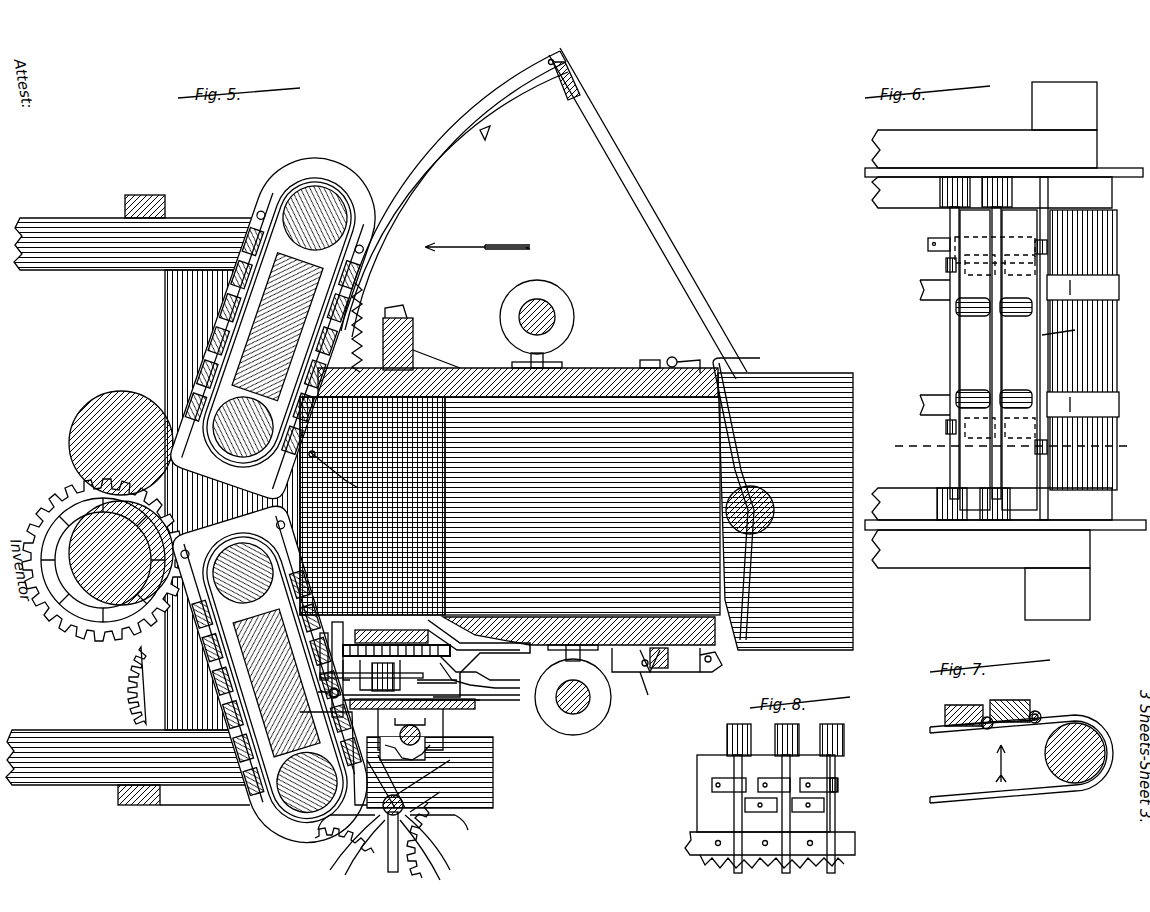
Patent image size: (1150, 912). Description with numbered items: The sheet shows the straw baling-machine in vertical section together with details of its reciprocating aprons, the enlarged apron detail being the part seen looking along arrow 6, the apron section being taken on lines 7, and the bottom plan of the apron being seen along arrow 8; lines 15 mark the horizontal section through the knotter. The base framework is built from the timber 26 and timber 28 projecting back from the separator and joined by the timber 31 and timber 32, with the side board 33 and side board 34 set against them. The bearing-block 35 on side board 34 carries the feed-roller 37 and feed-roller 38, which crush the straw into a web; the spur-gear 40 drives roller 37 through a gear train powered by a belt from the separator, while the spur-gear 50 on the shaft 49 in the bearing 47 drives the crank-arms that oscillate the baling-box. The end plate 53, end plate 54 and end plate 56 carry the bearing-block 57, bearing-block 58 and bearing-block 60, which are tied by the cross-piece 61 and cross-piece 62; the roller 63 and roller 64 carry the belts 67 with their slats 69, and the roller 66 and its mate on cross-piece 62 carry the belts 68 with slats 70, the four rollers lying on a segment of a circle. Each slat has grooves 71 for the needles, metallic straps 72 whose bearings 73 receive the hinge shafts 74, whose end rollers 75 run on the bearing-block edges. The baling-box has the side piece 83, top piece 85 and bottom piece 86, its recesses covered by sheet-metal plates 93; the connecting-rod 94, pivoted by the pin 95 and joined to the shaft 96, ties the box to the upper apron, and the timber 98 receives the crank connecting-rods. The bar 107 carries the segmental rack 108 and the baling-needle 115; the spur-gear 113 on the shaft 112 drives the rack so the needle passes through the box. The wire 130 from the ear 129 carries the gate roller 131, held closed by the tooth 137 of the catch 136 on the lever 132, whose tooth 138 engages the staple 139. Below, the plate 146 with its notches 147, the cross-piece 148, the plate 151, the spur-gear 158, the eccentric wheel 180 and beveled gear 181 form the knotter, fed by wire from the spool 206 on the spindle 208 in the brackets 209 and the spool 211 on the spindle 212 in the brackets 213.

In FIG. 5, the arrow 6 is at (477, 238).
In FIG. 6, the section lines 7 is at (1010, 447).
In FIG. 7, the arrow 8 is at (1007, 763).
In FIG. 5, the section lines 15 is at (490, 694).
In FIG. 5, the timber 26 is at (85, 268).
In FIG. 6, the timber 26 is at (1057, 594).
In FIG. 5, the timber 28 is at (75, 785).
In FIG. 6, the timber 28 is at (1064, 106).
In FIG. 5, the timber 31 is at (148, 196).
In FIG. 5, the timber 32 is at (130, 806).
In FIG. 6, the side board 33 is at (984, 149).
In FIG. 6, the side board 34 is at (981, 549).
In FIG. 5, the bearing-block 35 is at (148, 500).
In FIG. 5, the feed-roller 37 is at (73, 528).
In FIG. 5, the feed-roller 38 is at (80, 420).
In FIG. 5, the spur-gear 40 is at (62, 600).
In FIG. 5, the bearing 47 is at (403, 820).
In FIG. 5, the shaft 49 is at (378, 825).
In FIG. 5, the spur-gear 50 is at (465, 834).
In FIG. 5, the end plate 53 is at (233, 682).
In FIG. 5, the end plate 54 is at (264, 322).
In FIG. 6, the end plate 54 is at (1128, 530).
In FIG. 6, the end plate 56 is at (1118, 169).
In FIG. 5, the bearing-block 57 is at (333, 758).
In FIG. 5, the bearing-block 58 is at (279, 322).
In FIG. 6, the bearing-block 58 is at (1100, 503).
In FIG. 6, the bearing-block 60 is at (992, 192).
In FIG. 5, the cross-piece 61 is at (276, 683).
In FIG. 5, the cross-piece 62 is at (277, 327).
In FIG. 5, the roller 63 is at (307, 782).
In FIG. 5, the roller 64 is at (243, 573).
In FIG. 5, the roller 66 is at (314, 217).
In FIG. 6, the roller 66 is at (1100, 345).
In FIG. 7, the roller 66 is at (1090, 735).
In FIG. 5, the belts 67 is at (275, 677).
In FIG. 5, the belts 68 is at (243, 427).
In FIG. 6, the belts 68 is at (1108, 282).
In FIG. 7, the belts 68 is at (1112, 742).
In FIG. 8, the belts 68 is at (770, 850).
In FIG. 5, the slats 69 is at (276, 682).
In FIG. 5, the slats 70 is at (272, 340).
In FIG. 6, the slats 70 is at (1045, 340).
In FIG. 7, the slats 70 is at (950, 704).
In FIG. 8, the slats 70 is at (697, 808).
In FIG. 6, the grooves 71 is at (965, 305).
In FIG. 6, the metallic straps 72 is at (927, 244).
In FIG. 7, the metallic straps 72 is at (965, 728).
In FIG. 8, the metallic straps 72 is at (768, 778).
In FIG. 6, the bearings 73 is at (946, 263).
In FIG. 7, the bearings 73 is at (990, 730).
In FIG. 8, the bearings 73 is at (740, 784).
In FIG. 8, the shafts 74 is at (836, 815).
In FIG. 5, the rollers 75 is at (325, 691).
In FIG. 6, the rollers 75 is at (940, 190).
In FIG. 8, the rollers 75 is at (800, 730).
In FIG. 5, the side piece 83 is at (762, 511).
In FIG. 5, the top piece 85 is at (602, 368).
In FIG. 5, the bottom piece 86 is at (598, 617).
In FIG. 5, the sheet-metal plates 93 is at (425, 490).
In FIG. 5, the connecting-rod 94 is at (413, 345).
In FIG. 5, the pin 95 is at (344, 475).
In FIG. 6, the shaft 96 is at (1080, 328).
In FIG. 7, the shaft 96 is at (1035, 725).
In FIG. 5, the timber 98 is at (420, 330).
In FIG. 5, the bar 107 is at (578, 80).
In FIG. 5, the segmental rack 108 is at (470, 163).
In FIG. 5, the shaft 112 is at (493, 795).
In FIG. 5, the spur-gear 113 is at (415, 800).
In FIG. 5, the baling-needle 115 is at (436, 144).
In FIG. 5, the ear 129 is at (672, 357).
In FIG. 5, the wire 130 is at (736, 462).
In FIG. 5, the roller 131 is at (768, 500).
In FIG. 5, the lever 132 is at (677, 657).
In FIG. 5, the catch 136 is at (668, 672).
In FIG. 5, the tooth 137 is at (715, 670).
In FIG. 5, the tooth 138 is at (655, 688).
In FIG. 5, the staple 139 is at (676, 672).
In FIG. 5, the plate 146 is at (440, 615).
In FIG. 5, the notches 147 is at (345, 615).
In FIG. 5, the cross-piece 148 is at (380, 628).
In FIG. 5, the plate 151 is at (468, 625).
In FIG. 5, the spur-gear 158 is at (478, 671).
In FIG. 5, the wheel 180 is at (470, 688).
In FIG. 5, the beveled gear 181 is at (452, 712).
In FIG. 5, the spool 206 is at (560, 667).
In FIG. 5, the spindle 208 is at (556, 710).
In FIG. 5, the brackets 209 is at (570, 645).
In FIG. 5, the spool 211 is at (538, 320).
In FIG. 5, the spindle 212 is at (525, 325).
In FIG. 5, the brackets 213 is at (545, 357).